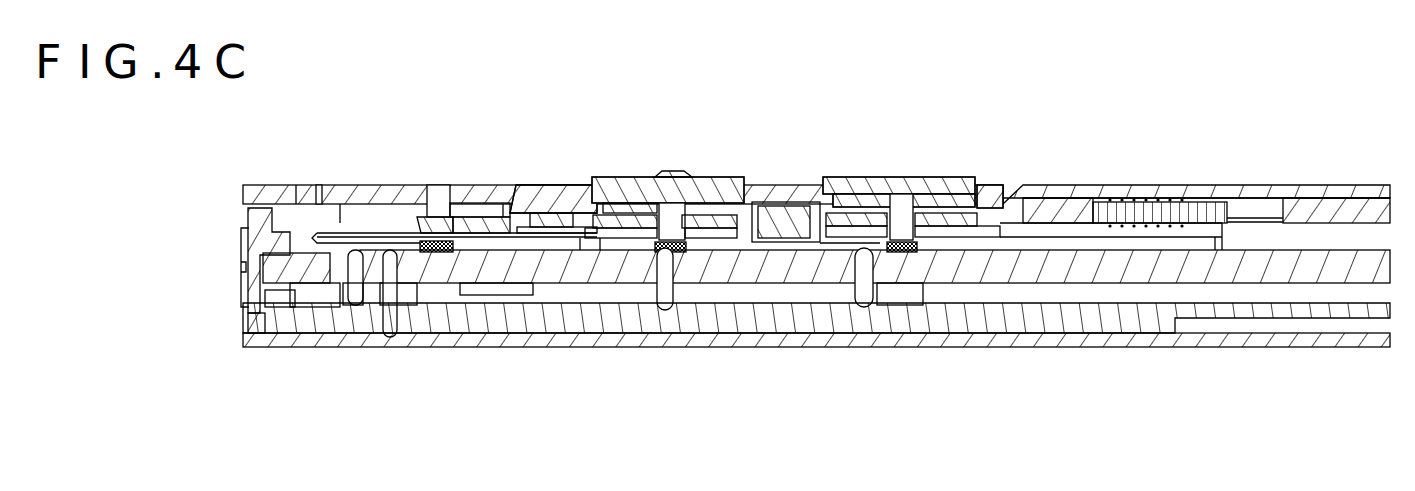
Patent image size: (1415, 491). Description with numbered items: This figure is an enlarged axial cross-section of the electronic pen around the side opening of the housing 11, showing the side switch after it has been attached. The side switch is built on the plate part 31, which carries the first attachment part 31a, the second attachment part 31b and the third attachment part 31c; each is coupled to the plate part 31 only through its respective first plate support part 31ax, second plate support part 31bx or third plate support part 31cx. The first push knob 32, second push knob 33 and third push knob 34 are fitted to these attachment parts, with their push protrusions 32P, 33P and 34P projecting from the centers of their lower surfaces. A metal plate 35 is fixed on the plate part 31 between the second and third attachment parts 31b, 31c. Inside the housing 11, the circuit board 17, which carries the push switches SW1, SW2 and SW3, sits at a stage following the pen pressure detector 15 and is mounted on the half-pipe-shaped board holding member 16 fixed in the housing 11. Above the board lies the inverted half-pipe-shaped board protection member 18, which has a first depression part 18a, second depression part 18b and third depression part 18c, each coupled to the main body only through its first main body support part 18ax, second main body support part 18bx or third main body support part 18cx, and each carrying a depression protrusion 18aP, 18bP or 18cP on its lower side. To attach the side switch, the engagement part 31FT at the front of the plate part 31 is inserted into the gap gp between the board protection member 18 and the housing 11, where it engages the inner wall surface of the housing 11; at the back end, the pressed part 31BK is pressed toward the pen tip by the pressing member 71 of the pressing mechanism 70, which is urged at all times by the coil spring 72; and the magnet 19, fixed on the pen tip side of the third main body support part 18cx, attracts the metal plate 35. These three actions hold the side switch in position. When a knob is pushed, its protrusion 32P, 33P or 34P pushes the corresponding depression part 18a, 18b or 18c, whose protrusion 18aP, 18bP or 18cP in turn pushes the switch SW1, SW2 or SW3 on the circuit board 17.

The housing 11 is at (270, 185).
The gap gp is at (297, 187).
The engagement part 31FT is at (318, 187).
The plate part 31 is at (347, 187).
The first attachment part 31a is at (412, 187).
The first plate support part 31ax is at (503, 187).
The first push knob 32 is at (450, 187).
The push protrusion 32P is at (435, 187).
The second attachment part 31b is at (643, 180).
The second plate support part 31bx is at (735, 180).
The second push knob 33 is at (667, 172).
The push protrusion 33P is at (688, 180).
The metal plate 35 is at (780, 204).
The third attachment part 31c is at (878, 180).
The third plate support part 31cx is at (968, 180).
The third push knob 34 is at (903, 180).
The push protrusion 34P is at (917, 180).
The pressed part 31BK is at (995, 186).
The pressing mechanism 70 is at (1206, 164).
The pressing member 71 is at (1083, 198).
The coil spring 72 is at (1082, 143).
The pen pressure detector 15 is at (250, 333).
The board protection member 18 is at (298, 307).
The first depression part 18a is at (488, 241).
The first main body support part 18ax is at (355, 305).
The depression protrusion 18aP is at (465, 250).
The push switch SW1 is at (423, 252).
The second depression part 18b is at (712, 241).
The second main body support part 18bx is at (595, 295).
The depression protrusion 18bP is at (697, 250).
The push switch SW2 is at (658, 252).
The third depression part 18c is at (950, 241).
The third main body support part 18cx is at (830, 290).
The depression protrusion 18cP is at (930, 250).
The push switch SW3 is at (902, 252).
The magnet 19 is at (773, 300).
The board holding member 16 is at (1063, 323).
The circuit board 17 is at (1194, 268).